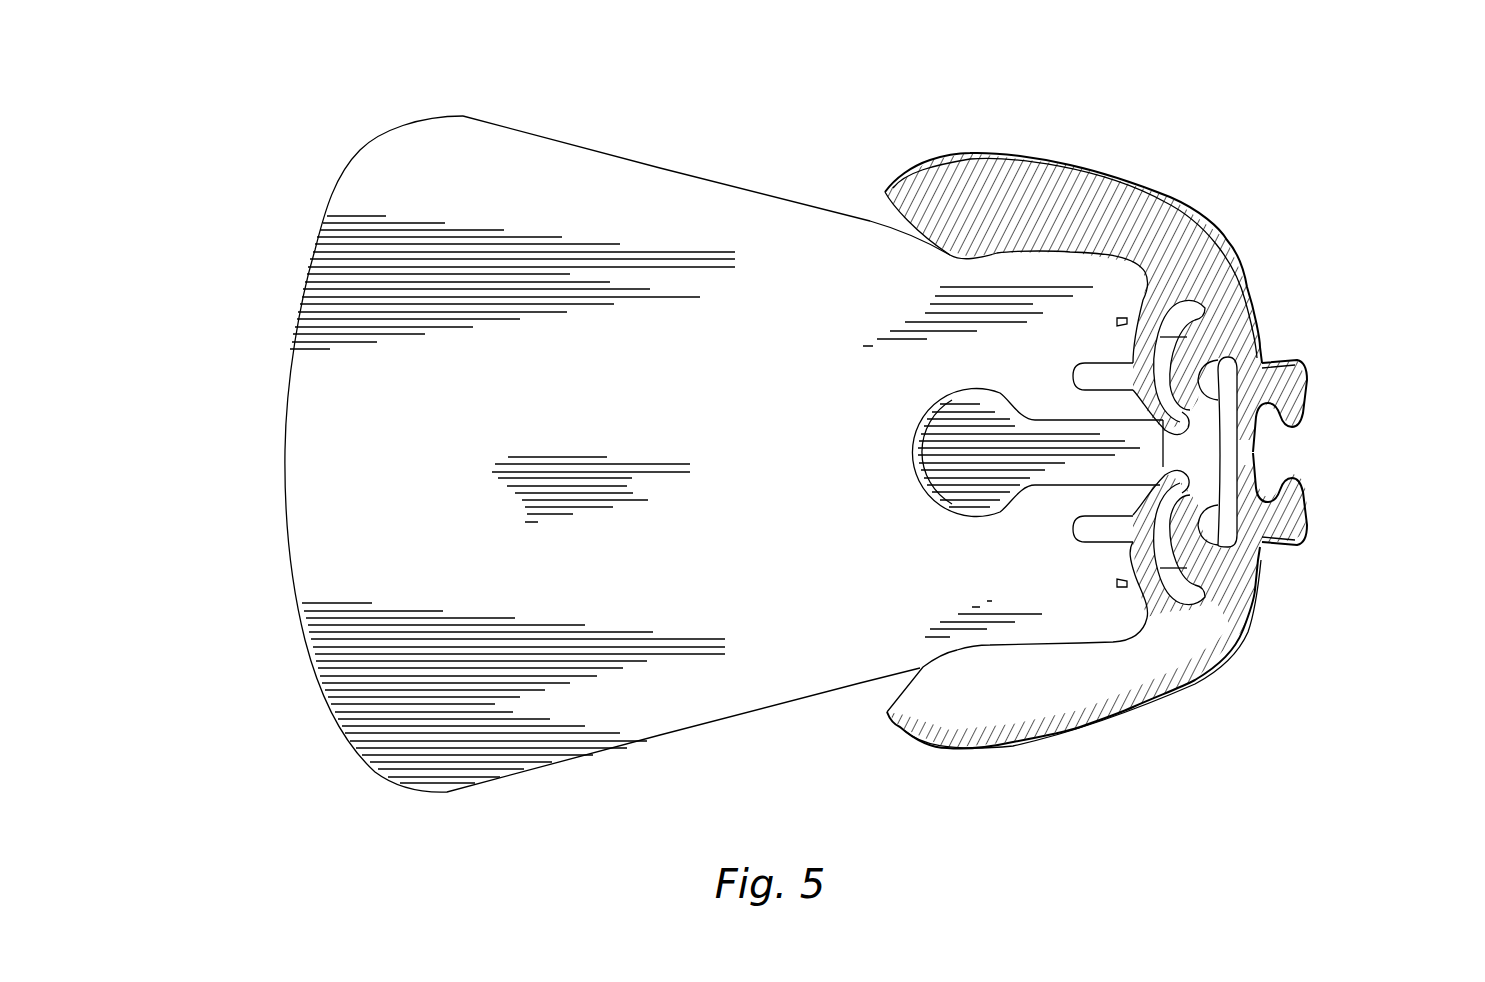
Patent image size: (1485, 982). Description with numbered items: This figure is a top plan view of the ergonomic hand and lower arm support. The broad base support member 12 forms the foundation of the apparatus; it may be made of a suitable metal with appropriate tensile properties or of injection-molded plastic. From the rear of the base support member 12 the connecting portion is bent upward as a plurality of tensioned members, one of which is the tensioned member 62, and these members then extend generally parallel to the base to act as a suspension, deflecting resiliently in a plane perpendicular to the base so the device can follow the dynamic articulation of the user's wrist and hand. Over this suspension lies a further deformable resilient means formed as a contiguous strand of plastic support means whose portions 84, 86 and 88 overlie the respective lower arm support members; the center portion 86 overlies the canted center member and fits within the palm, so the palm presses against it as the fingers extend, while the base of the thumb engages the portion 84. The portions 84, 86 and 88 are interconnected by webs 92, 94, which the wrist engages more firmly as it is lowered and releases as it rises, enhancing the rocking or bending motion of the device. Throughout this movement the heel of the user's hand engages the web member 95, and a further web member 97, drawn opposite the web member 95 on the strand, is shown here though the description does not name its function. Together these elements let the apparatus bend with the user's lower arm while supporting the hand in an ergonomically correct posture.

The base support member 12 is at (285, 452).
The plastic support means portion 88 is at (967, 197).
The plastic support means portion 84 is at (990, 710).
The web 94 is at (1270, 360).
The web 92 is at (1243, 543).
The tensioned member 62 is at (1222, 450).
The plastic support means portion 86 is at (947, 457).
The web member 95 is at (1120, 363).
The lower lug 97 is at (1120, 527).